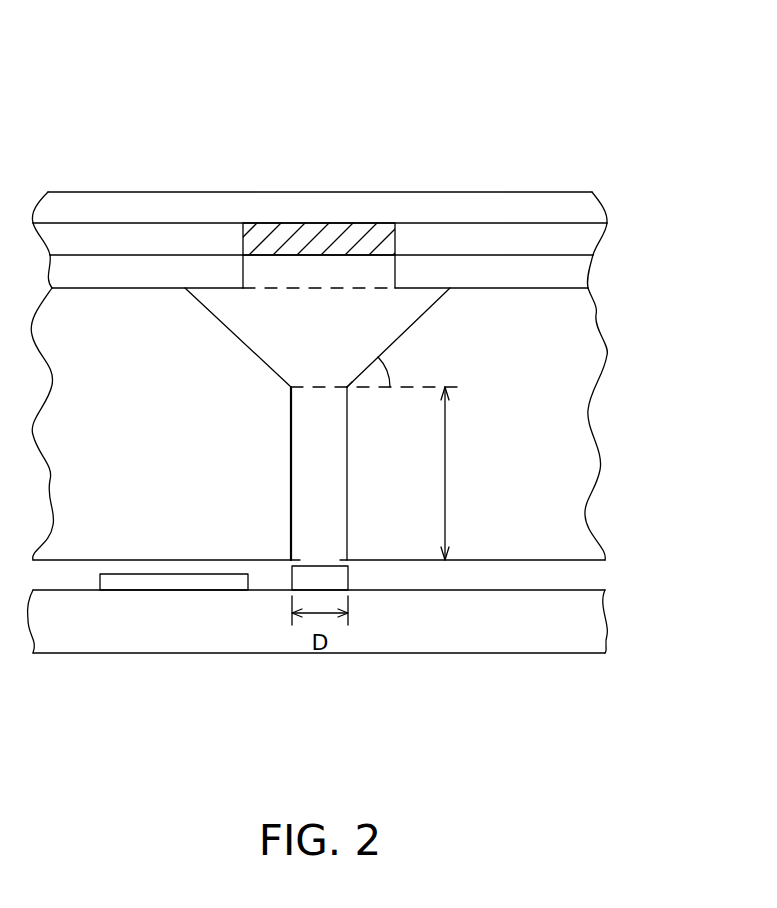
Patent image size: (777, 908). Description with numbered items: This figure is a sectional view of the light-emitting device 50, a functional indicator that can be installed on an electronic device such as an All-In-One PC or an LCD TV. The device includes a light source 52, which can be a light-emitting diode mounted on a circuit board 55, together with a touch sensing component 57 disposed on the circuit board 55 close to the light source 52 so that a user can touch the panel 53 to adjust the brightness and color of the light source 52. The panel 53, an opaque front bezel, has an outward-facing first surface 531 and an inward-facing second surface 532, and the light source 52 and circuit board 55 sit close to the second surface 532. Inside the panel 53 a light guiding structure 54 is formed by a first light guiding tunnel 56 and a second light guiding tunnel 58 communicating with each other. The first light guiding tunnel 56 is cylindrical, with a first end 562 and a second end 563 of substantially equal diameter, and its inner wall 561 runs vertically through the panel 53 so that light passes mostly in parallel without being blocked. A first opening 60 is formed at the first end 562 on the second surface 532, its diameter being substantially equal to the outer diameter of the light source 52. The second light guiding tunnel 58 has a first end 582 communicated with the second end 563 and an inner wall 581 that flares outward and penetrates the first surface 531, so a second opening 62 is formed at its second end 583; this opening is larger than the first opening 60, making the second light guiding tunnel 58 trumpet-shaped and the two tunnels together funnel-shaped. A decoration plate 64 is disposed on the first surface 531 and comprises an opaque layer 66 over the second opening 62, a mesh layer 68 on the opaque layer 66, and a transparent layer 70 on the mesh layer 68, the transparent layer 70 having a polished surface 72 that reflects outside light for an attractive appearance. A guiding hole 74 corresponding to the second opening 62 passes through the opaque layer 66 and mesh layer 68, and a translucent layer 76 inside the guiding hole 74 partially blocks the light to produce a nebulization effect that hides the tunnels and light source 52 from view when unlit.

The light-emitting device 50 is at (548, 80).
The light source 52 is at (332, 577).
The panel 53 is at (349, 441).
The first surface 531 is at (537, 290).
The second surface 532 is at (507, 560).
The light guiding structure 54 is at (289, 424).
The circuit board 55 is at (486, 632).
The first light guiding tunnel 56 is at (290, 471).
The inner wall 561 is at (348, 490).
The first end 562 is at (290, 558).
The second end 563 is at (349, 389).
The touch sensing component 57 is at (170, 580).
The second light guiding tunnel 58 is at (289, 337).
The inner wall 581 is at (415, 323).
The first end 582 is at (291, 387).
The second end 583 is at (183, 290).
The first opening 60 is at (320, 559).
The second opening 62 is at (343, 290).
The decoration plate 64 is at (365, 229).
The opaque layer 66 is at (343, 240).
The mesh layer 68 is at (336, 205).
The transparent layer 70 is at (590, 205).
The polished surface 72 is at (221, 192).
The guiding hole 74 is at (293, 267).
The translucent layer 76 is at (267, 232).